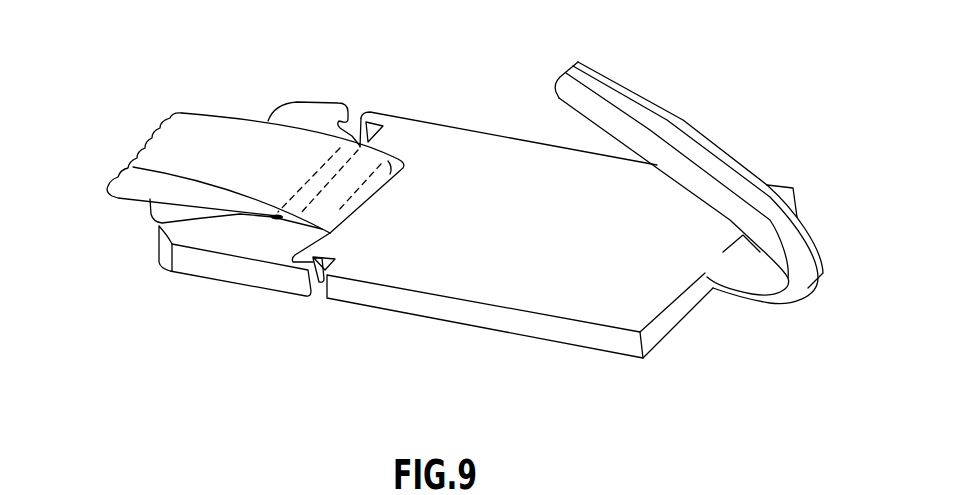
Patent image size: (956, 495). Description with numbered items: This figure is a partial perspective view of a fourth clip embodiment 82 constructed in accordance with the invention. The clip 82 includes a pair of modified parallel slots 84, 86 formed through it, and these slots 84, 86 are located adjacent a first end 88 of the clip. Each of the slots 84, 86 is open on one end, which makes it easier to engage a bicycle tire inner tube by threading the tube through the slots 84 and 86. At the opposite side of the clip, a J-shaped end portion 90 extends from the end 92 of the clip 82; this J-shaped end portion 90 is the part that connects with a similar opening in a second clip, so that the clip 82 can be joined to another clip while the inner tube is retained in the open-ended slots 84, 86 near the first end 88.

The fourth clip embodiment 82 is at (500, 66).
The modified parallel slot 84 is at (271, 222).
The modified parallel slot 86 is at (347, 220).
The first end 88 is at (155, 228).
The J-shaped end portion 90 is at (737, 161).
The end 92 is at (672, 318).